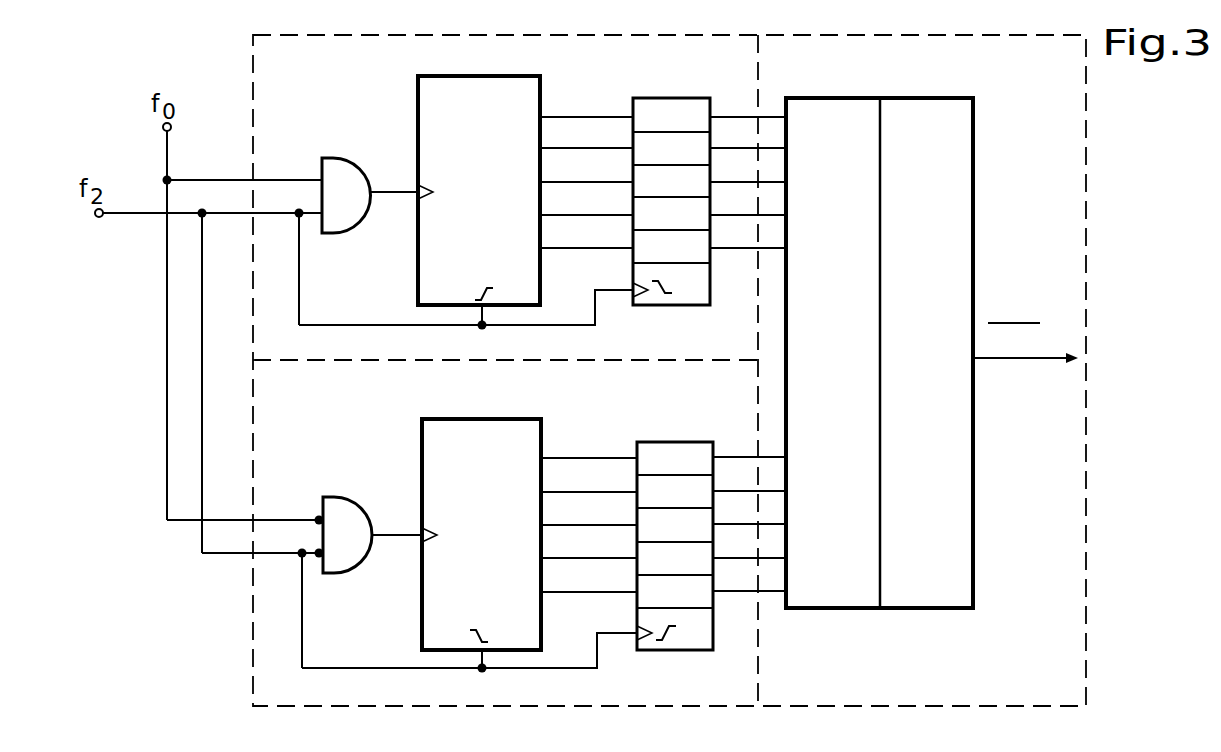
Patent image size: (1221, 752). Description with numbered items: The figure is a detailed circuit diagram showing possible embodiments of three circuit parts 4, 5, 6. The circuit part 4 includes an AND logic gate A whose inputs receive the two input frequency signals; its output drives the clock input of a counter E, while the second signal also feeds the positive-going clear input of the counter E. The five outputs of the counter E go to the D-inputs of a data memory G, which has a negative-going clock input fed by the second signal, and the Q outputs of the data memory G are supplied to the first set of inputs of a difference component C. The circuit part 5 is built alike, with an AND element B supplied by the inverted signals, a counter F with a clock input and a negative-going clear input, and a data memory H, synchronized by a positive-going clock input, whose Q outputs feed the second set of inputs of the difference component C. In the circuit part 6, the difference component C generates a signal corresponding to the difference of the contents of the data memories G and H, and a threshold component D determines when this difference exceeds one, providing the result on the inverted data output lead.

The circuit part 4 is at (524, 205).
The circuit part 5 is at (527, 547).
The circuit part 6 is at (922, 369).